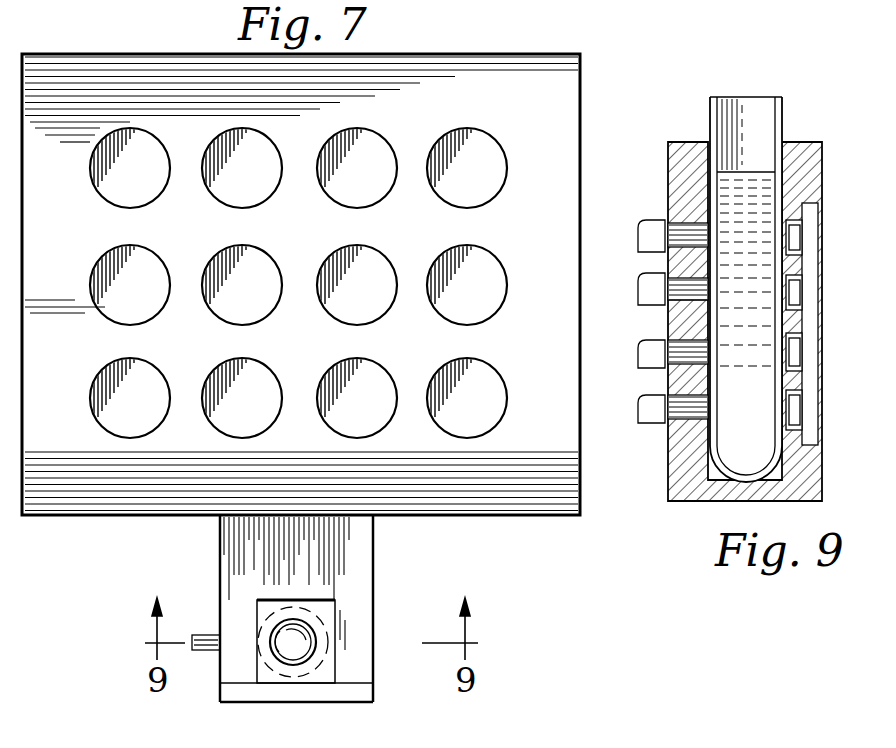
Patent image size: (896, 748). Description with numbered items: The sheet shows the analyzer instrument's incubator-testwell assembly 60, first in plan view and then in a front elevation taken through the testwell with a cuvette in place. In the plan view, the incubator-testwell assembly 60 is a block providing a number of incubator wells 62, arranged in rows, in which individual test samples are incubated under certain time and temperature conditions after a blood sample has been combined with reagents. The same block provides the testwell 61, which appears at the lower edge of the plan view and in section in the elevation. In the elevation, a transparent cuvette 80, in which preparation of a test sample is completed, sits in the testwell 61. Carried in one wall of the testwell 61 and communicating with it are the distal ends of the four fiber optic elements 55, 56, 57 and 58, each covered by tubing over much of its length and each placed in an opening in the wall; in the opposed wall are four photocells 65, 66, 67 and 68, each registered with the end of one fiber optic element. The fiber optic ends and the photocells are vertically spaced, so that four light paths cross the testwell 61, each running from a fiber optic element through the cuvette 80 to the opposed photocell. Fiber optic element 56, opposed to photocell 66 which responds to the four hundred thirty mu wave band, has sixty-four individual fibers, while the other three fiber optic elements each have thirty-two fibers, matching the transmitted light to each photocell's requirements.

In FIG. 7, the fiber optic element 55 is at (206, 634).
In FIG. 9, the fiber optic element 55 is at (650, 224).
In FIG. 9, the fiber optic element 56 is at (648, 280).
In FIG. 9, the fiber optic element 57 is at (648, 348).
In FIG. 9, the fiber optic element 58 is at (640, 416).
In FIG. 7, the incubator-testwell assembly 60 is at (571, 473).
In FIG. 7, the testwell 61 is at (316, 680).
In FIG. 7, the incubator well 62 is at (498, 163).
In FIG. 9, the photocell 65 is at (802, 249).
In FIG. 9, the photocell 66 is at (803, 300).
In FIG. 9, the photocell 67 is at (796, 341).
In FIG. 9, the photocell 68 is at (792, 398).
In FIG. 7, the cuvette 80 is at (333, 636).
In FIG. 9, the cuvette 80 is at (712, 104).